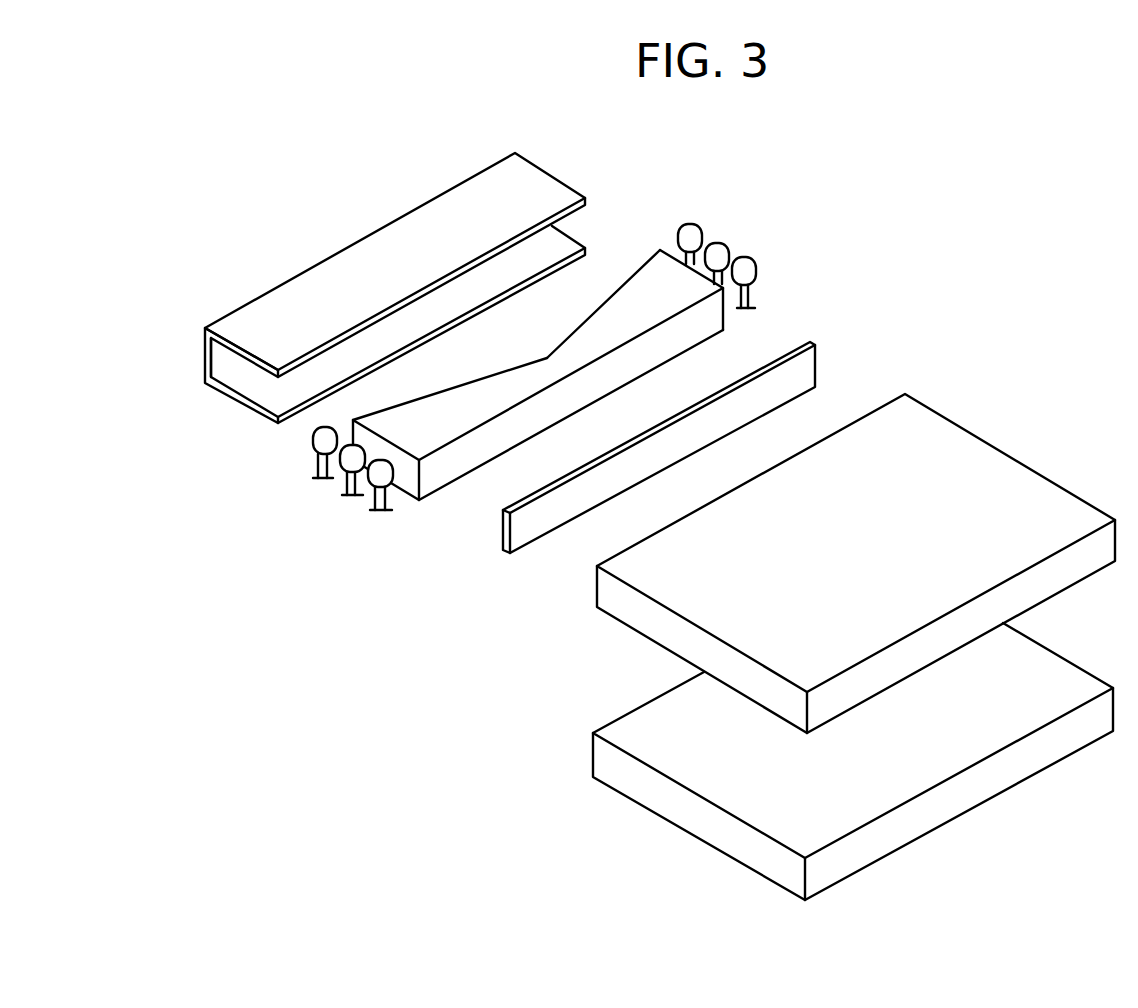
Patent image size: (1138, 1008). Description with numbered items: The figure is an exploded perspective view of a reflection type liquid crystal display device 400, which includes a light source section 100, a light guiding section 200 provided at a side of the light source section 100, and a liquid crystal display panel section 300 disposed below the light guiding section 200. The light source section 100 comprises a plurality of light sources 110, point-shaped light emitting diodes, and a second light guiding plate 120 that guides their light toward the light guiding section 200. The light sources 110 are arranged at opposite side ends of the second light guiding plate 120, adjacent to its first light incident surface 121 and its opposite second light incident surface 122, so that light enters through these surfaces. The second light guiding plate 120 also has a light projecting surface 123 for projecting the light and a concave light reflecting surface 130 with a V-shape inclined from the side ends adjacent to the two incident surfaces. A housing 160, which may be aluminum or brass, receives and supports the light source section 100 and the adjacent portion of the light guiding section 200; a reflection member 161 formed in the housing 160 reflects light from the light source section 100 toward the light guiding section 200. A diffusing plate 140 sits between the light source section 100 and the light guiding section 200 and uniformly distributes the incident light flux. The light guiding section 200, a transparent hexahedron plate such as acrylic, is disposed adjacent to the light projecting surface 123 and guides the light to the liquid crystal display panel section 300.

The light source section 100 is at (911, 229).
The light sources 110 is at (692, 209).
The second light guiding plate 120 is at (606, 414).
The first light incident surface 121 is at (727, 322).
The second light incident surface 122 is at (410, 482).
The light projecting surface 123 is at (452, 465).
The light reflecting surface 130 is at (537, 350).
The diffusing plate 140 is at (537, 530).
The housing 160 is at (557, 178).
The reflection member 161 is at (222, 362).
The light guiding section 200 is at (971, 463).
The liquid crystal display panel section 300 is at (1038, 678).
The reflection type liquid crystal display device 400 is at (1015, 197).